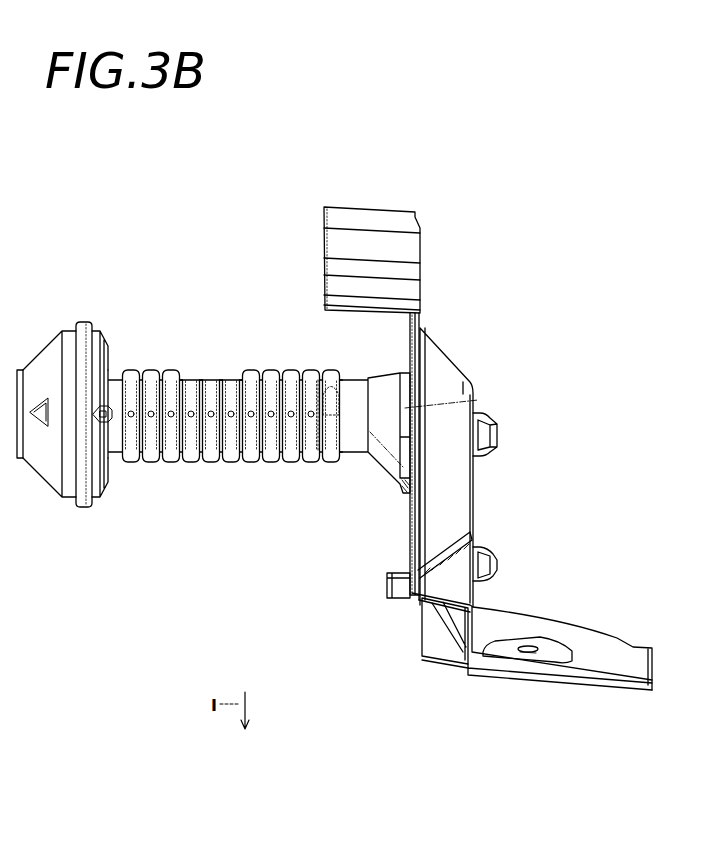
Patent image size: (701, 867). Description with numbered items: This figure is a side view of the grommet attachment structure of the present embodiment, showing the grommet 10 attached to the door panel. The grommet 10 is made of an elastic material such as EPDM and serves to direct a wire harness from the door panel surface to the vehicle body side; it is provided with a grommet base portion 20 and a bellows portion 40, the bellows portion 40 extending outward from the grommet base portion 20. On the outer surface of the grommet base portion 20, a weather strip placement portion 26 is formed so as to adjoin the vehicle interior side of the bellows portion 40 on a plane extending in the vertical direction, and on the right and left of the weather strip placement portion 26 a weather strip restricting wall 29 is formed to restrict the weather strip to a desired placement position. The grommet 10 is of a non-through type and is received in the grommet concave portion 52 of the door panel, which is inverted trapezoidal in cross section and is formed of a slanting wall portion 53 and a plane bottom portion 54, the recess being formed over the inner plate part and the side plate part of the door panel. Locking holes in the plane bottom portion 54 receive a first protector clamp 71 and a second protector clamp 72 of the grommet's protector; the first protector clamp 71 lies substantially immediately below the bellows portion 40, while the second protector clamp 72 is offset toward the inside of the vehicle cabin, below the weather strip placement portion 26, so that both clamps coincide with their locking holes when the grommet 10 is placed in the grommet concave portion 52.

The grommet 10 is at (148, 229).
The bellows portion 40 is at (168, 368).
The grommet base portion 20 is at (408, 350).
The weather strip placement portion 26 is at (410, 536).
The weather strip restricting wall 29 is at (385, 578).
The grommet concave portion 52 is at (470, 270).
The slanting wall portion 53 is at (437, 352).
The plane bottom portion 54 is at (478, 401).
The first protector clamp 71 is at (498, 430).
The second protector clamp 72 is at (498, 560).